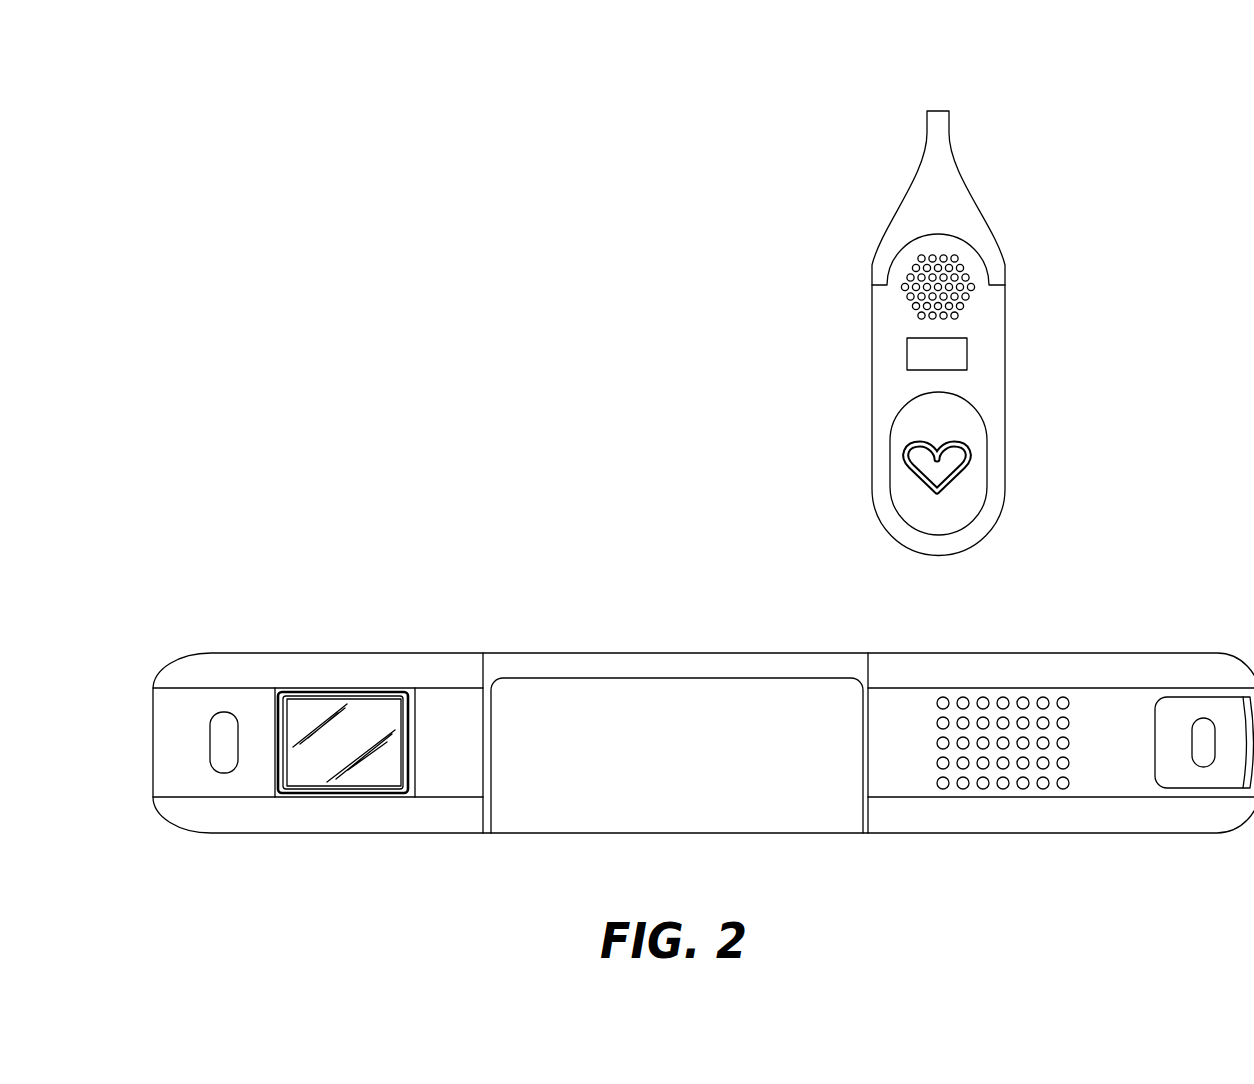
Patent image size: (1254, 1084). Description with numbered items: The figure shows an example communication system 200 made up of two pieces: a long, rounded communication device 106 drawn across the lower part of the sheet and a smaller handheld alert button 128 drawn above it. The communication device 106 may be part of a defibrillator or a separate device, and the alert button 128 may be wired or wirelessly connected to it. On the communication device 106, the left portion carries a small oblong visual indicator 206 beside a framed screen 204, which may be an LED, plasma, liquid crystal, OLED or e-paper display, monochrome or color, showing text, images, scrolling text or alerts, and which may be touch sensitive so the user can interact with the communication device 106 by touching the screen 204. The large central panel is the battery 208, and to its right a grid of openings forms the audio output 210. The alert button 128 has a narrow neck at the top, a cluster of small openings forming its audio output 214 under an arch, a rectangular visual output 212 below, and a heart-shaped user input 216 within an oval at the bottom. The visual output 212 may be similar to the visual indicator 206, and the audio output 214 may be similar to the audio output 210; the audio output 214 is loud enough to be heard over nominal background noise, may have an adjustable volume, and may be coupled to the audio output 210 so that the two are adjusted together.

The communication system 200 is at (1163, 98).
The alert button 128 is at (853, 316).
The audio output 214 is at (966, 270).
The visual output 212 is at (960, 352).
The user input 216 is at (968, 455).
The communication device 106 is at (360, 600).
The visual indicator 206 is at (220, 733).
The screen 204 is at (310, 705).
The battery 208 is at (683, 727).
The audio output 210 is at (1068, 697).